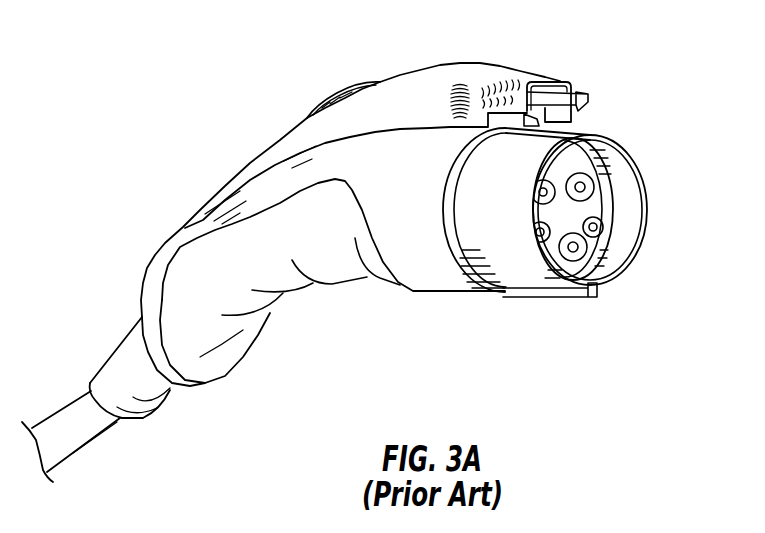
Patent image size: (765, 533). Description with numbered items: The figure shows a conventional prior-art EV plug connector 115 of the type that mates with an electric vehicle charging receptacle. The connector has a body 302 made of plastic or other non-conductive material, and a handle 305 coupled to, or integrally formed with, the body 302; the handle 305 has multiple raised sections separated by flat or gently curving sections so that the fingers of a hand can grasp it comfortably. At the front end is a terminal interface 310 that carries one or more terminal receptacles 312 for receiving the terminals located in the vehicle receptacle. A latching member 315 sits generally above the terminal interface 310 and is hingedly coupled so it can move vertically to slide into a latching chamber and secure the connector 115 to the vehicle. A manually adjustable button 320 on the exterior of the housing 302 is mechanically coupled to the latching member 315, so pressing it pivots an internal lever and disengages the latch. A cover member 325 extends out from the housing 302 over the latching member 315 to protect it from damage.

The EV plug connector 115 is at (303, 119).
The body 302 is at (442, 280).
The handle 305 is at (270, 320).
The terminal interface 310 is at (622, 185).
The terminal receptacles 312 is at (568, 278).
The latching member 315 is at (590, 108).
The manually adjustable button 320 is at (352, 82).
The cover member 325 is at (520, 78).